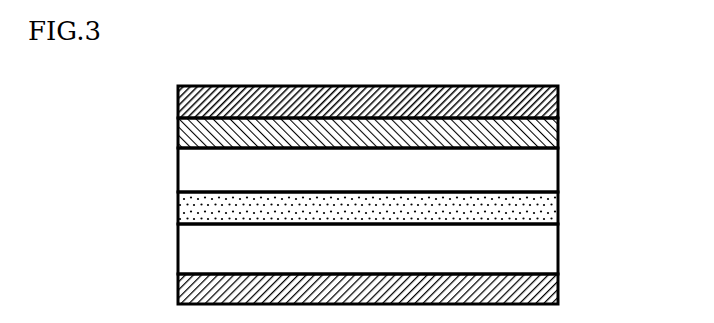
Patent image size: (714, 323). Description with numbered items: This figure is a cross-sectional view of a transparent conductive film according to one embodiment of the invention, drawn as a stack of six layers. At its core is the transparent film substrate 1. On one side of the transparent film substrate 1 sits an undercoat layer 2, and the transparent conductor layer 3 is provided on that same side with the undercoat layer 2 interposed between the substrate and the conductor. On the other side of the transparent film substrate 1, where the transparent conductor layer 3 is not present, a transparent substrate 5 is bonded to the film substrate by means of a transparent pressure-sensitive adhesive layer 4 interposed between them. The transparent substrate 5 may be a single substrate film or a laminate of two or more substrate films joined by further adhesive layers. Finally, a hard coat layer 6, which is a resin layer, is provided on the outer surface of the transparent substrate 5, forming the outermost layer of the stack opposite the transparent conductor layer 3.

The transparent film substrate 1 is at (548, 175).
The undercoat layer 2 is at (558, 137).
The transparent conductor layer 3 is at (558, 98).
The transparent pressure-sensitive adhesive layer 4 is at (548, 212).
The transparent substrate 5 is at (548, 253).
The hard coat layer 6 is at (558, 287).